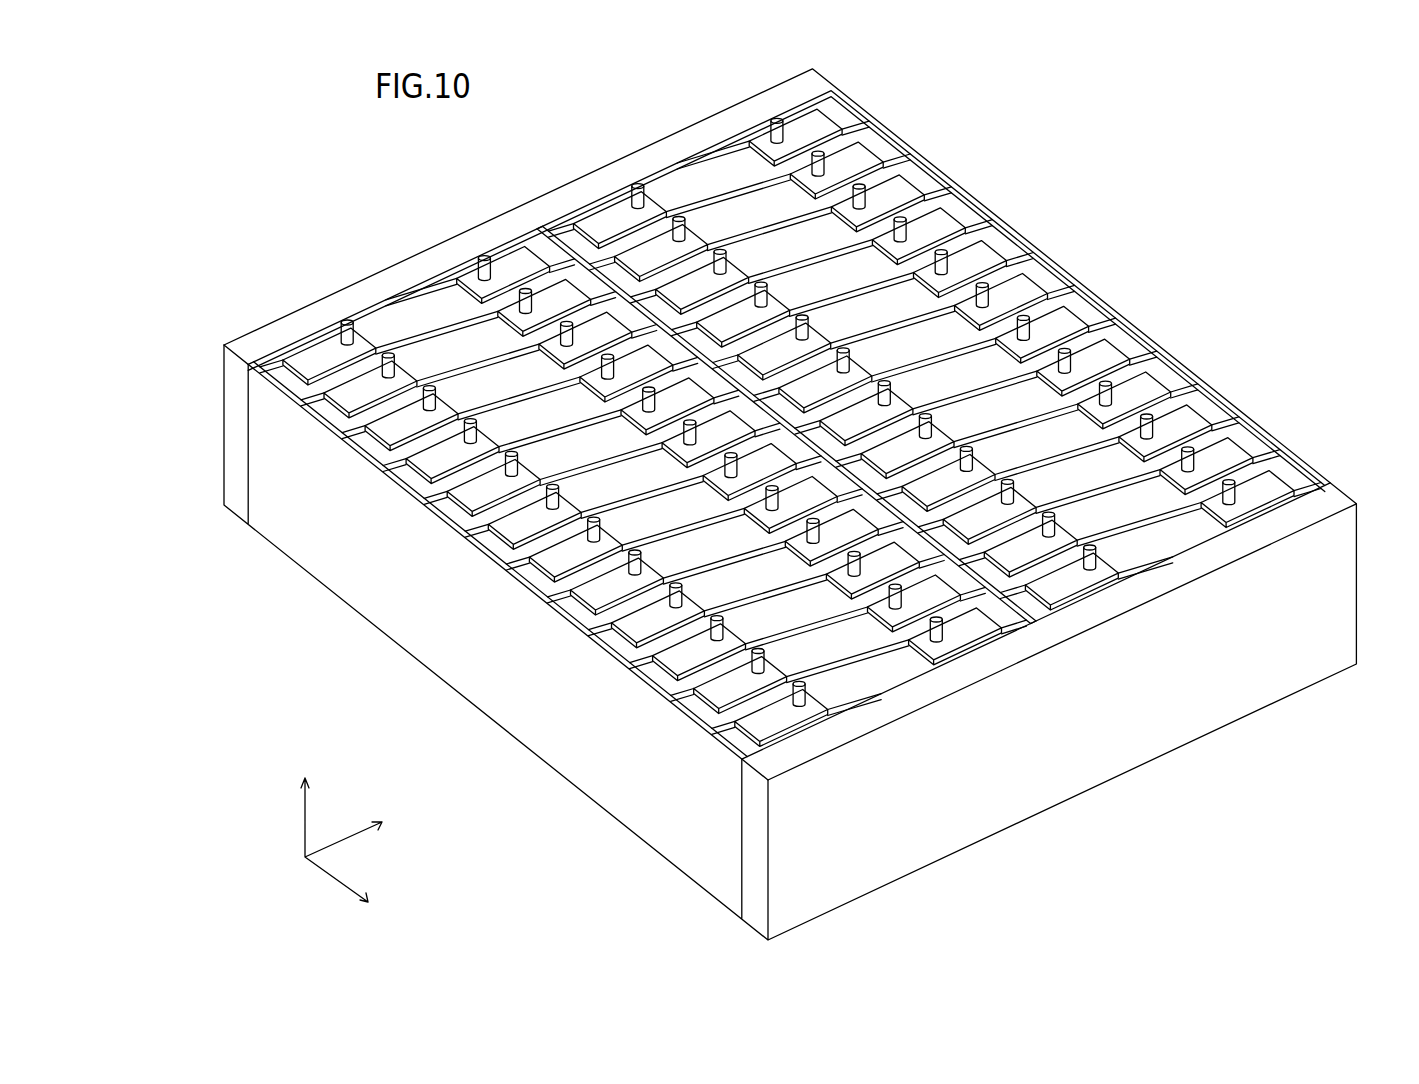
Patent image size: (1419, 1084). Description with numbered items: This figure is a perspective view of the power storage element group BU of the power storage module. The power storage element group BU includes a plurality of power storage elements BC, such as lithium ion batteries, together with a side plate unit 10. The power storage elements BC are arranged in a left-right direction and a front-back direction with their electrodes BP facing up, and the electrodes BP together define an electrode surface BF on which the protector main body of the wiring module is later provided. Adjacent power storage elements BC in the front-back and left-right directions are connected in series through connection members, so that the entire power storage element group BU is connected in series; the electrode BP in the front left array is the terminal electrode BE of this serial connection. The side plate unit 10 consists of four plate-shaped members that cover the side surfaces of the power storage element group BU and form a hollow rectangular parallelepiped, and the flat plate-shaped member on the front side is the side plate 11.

The power storage element group BU is at (1113, 203).
The power storage element BC is at (880, 150).
The electrode BP is at (360, 390).
The electrode surface BF is at (750, 214).
The terminal electrode BE is at (768, 722).
The side plate unit 10 is at (416, 272).
The side plate 11 is at (1255, 655).